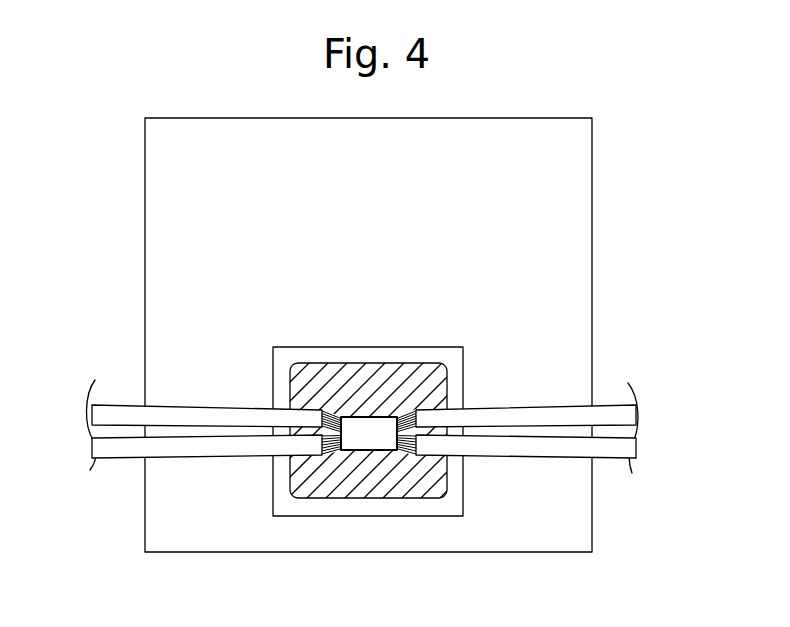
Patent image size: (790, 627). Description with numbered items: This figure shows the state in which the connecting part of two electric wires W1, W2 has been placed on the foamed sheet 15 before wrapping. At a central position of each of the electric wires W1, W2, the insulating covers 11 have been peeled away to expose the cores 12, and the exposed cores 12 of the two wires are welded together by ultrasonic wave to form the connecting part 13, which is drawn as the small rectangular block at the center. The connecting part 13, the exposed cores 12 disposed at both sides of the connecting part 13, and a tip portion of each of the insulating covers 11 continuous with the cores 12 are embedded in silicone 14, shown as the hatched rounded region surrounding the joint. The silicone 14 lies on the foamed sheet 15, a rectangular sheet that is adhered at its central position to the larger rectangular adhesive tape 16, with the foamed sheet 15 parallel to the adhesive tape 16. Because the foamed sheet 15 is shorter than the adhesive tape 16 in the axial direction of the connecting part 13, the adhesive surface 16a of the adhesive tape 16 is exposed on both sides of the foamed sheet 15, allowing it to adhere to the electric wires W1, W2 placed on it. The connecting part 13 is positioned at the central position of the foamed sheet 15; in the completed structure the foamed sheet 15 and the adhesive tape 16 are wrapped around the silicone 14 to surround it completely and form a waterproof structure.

The insulating cover 11 is at (303, 453).
The cores 12 is at (334, 450).
The connecting part 13 is at (367, 437).
The silicone 14 is at (402, 490).
The foamed sheet 15 is at (463, 347).
The adhesive tape 16 is at (593, 138).
The adhesive surface 16a is at (565, 178).
The electric wire W1 is at (127, 412).
The electric wire W2 is at (117, 448).